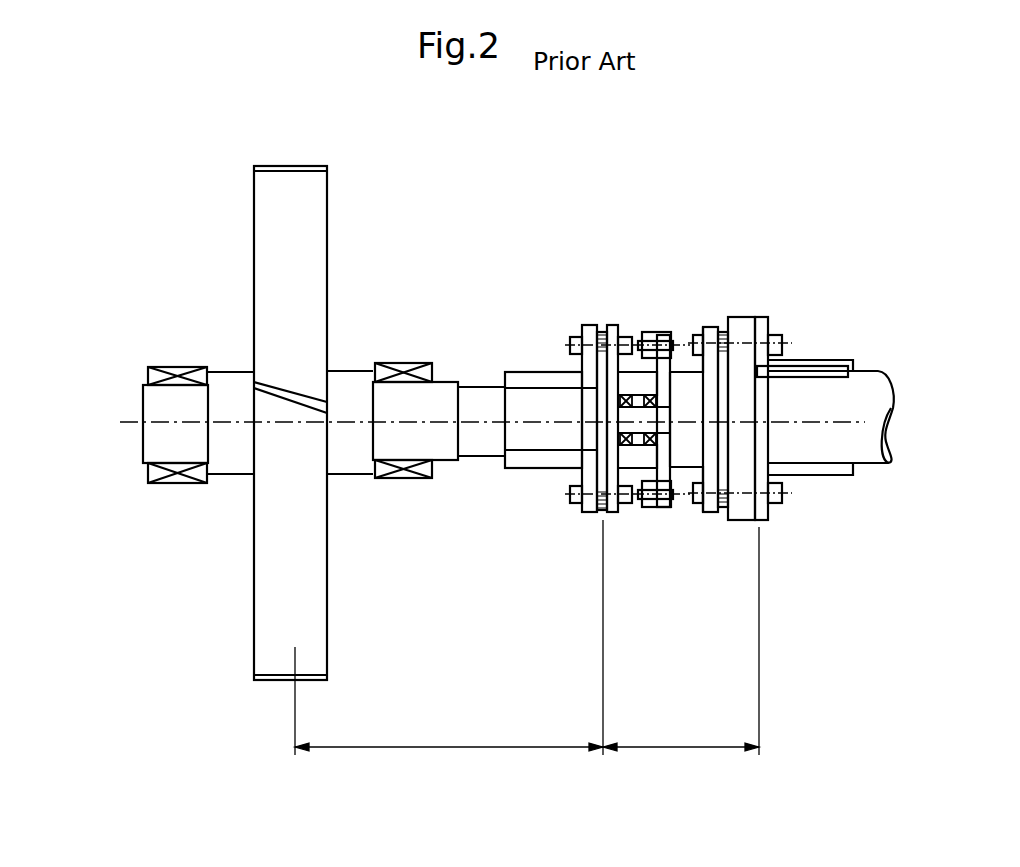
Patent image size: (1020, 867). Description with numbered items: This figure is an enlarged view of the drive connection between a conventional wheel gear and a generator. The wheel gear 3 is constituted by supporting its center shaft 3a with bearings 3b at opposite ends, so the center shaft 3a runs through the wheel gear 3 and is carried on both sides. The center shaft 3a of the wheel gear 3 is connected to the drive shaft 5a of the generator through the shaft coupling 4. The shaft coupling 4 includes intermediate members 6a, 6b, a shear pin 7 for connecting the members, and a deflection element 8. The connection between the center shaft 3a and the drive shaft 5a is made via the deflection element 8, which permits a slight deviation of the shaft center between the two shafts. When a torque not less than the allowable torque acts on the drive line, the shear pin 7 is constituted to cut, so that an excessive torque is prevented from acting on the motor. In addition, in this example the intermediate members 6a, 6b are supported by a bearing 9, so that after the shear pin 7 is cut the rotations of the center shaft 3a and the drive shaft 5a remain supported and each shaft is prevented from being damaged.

The wheel gear 3 is at (244, 204).
The center shaft 3a is at (179, 412).
The bearings 3b is at (177, 477).
The shaft coupling 4 is at (635, 260).
The drive shaft 5a is at (857, 395).
The intermediate member 6a is at (630, 380).
The intermediate member 6b is at (678, 372).
The shear pin 7 is at (652, 343).
The deflection element 8 is at (603, 513).
The bearing 9 is at (625, 446).